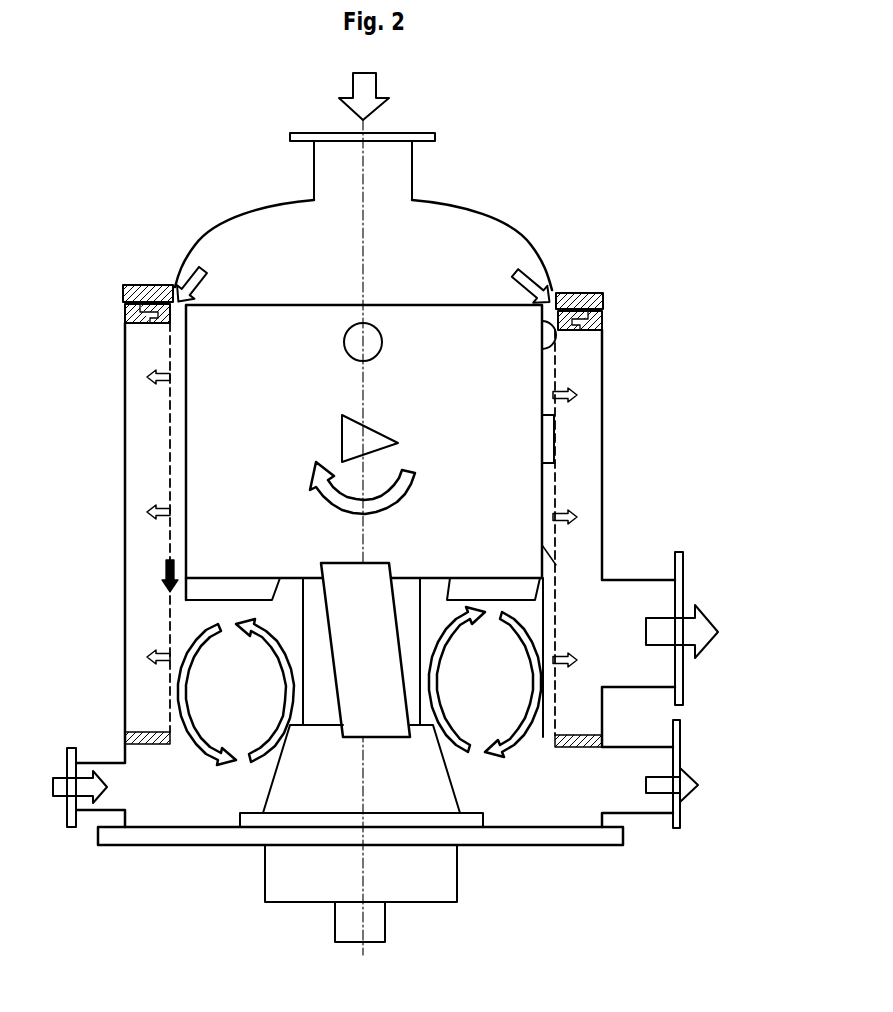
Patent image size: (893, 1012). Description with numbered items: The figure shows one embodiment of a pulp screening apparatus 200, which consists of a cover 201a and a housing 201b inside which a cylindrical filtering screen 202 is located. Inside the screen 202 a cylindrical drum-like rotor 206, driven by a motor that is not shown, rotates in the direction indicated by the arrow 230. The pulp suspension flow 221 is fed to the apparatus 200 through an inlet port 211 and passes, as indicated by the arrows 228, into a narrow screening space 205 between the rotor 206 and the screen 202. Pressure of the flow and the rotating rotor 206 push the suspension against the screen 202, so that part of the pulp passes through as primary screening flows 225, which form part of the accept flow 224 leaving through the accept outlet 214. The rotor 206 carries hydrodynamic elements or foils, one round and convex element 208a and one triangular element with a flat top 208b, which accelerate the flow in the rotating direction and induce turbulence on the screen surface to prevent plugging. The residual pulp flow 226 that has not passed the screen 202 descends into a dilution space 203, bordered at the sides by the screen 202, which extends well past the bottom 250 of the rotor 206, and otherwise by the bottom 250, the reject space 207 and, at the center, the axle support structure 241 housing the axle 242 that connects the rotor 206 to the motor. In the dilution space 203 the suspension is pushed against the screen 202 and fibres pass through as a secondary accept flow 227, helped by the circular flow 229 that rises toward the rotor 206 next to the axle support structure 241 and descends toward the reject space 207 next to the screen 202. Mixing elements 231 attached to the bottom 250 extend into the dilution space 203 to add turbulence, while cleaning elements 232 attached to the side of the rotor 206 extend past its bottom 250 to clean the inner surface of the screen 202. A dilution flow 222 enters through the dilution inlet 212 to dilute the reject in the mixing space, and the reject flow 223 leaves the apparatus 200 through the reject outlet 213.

The apparatus 200 is at (575, 91).
The cover 201a is at (200, 228).
The housing 201b is at (124, 508).
The cylindrical filtering screen 202 is at (168, 552).
The dilution space 203 is at (364, 725).
The screening space 205 is at (183, 479).
The rotor 206 is at (269, 358).
The reject space 207 is at (342, 786).
The hydrodynamic element 208a is at (540, 350).
The hydrodynamic element 208b is at (543, 440).
The inlet port 211 is at (410, 140).
The dilution inlet 212 is at (97, 763).
The reject outlet 213 is at (650, 815).
The accept outlet 214 is at (638, 580).
The pulp suspension flow 221 is at (372, 76).
The dilution flow 222 is at (60, 787).
The reject flow 223 is at (690, 788).
The accept flow 224 is at (705, 633).
The primary screening flows 225 is at (172, 377).
The residual pulp flow 226 is at (185, 568).
The secondary accept flow 227 is at (146, 658).
The pulp suspension flows 228 is at (363, 280).
The circular flow 229 is at (283, 668).
The rotating direction arrow 230 is at (392, 512).
The mixing elements 231 is at (363, 591).
The cleaning elements 232 is at (380, 565).
The axle support structure 241 is at (361, 702).
The axle 242 is at (385, 923).
The bottom of the rotor 250 is at (445, 577).